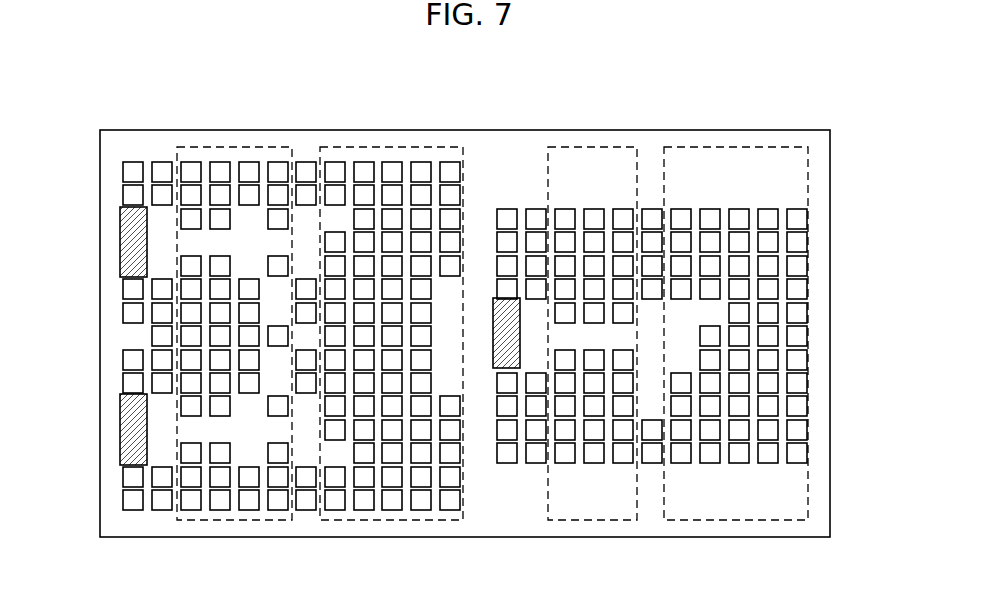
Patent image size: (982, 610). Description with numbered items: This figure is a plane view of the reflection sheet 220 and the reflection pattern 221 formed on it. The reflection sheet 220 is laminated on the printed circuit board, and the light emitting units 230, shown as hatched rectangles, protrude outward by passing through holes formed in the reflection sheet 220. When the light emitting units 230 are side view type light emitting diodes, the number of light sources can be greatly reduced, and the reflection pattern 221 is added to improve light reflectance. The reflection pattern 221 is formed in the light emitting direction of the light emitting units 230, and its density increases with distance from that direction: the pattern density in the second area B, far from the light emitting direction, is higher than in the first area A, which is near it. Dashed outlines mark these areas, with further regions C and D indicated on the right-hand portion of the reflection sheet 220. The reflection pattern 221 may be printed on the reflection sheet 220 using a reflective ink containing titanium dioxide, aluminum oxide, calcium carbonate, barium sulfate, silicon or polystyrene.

The reflection sheet 220 is at (830, 255).
The reflection pattern 221 is at (240, 222).
The light emitting units 230 is at (118, 247).
The first area A is at (233, 520).
The second area B is at (378, 520).
The region C is at (592, 520).
The region D is at (737, 520).